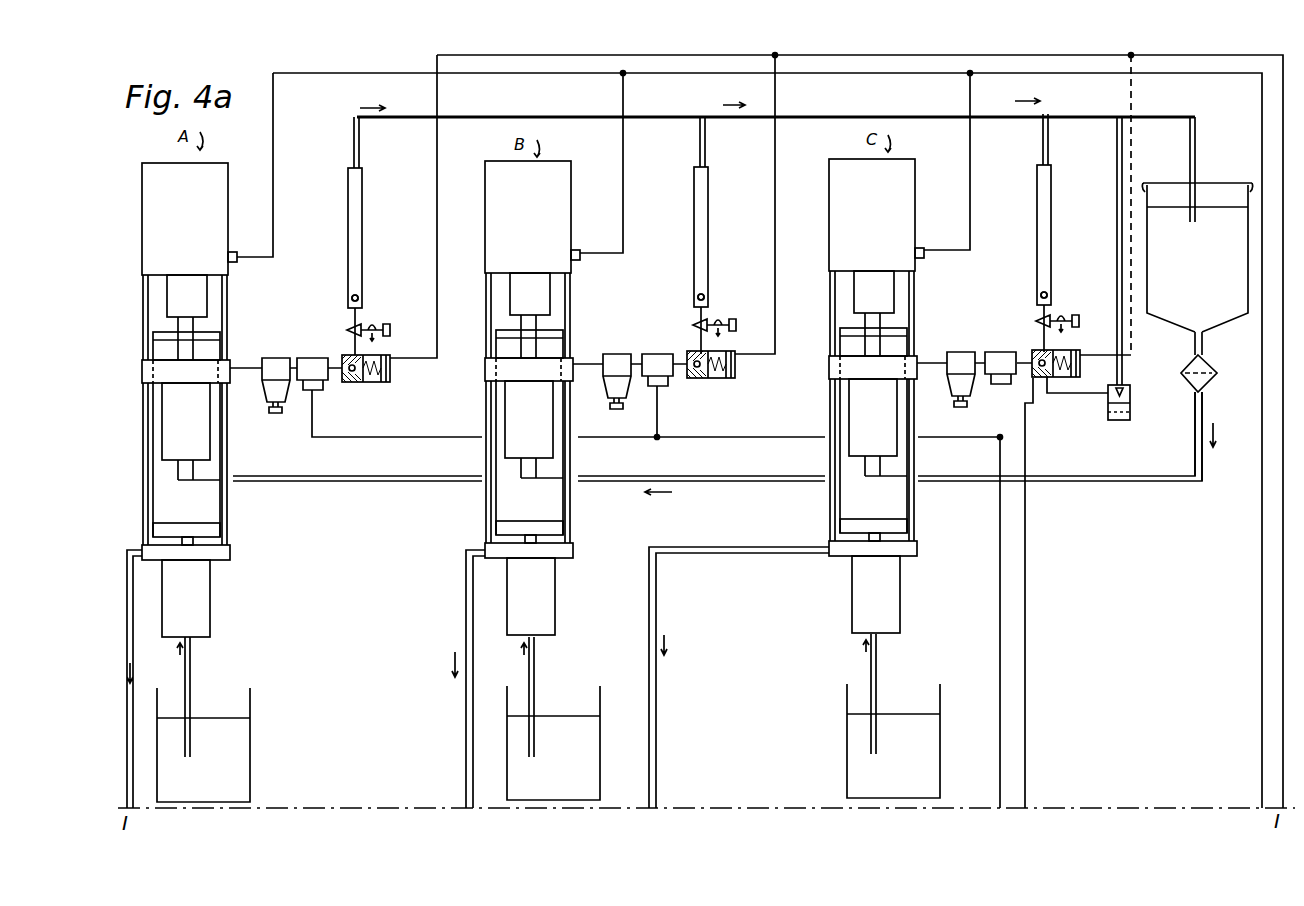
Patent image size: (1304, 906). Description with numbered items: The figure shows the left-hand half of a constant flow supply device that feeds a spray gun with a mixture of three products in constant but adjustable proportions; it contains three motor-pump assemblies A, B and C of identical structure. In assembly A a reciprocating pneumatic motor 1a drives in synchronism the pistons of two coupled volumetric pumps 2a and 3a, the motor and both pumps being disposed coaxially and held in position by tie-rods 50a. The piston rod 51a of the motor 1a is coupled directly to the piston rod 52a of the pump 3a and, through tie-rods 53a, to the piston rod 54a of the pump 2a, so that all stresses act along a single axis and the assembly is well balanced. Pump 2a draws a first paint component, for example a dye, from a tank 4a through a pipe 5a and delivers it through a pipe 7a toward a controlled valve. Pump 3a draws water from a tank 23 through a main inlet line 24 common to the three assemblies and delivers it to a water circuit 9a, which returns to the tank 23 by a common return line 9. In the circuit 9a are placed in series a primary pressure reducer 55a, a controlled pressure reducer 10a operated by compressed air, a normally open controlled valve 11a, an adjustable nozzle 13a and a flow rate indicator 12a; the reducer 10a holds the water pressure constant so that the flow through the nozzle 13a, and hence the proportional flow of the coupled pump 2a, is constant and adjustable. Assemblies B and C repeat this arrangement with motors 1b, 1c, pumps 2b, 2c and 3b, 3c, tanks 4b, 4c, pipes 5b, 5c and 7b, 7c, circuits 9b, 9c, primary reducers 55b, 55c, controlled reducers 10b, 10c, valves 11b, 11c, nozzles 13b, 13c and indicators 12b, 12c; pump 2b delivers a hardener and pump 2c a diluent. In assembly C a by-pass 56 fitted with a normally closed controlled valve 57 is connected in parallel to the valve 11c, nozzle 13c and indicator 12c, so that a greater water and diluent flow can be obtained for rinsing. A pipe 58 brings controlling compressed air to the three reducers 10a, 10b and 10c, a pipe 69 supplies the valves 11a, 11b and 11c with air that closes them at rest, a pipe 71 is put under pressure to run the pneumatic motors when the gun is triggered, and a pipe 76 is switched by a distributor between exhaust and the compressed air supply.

The reciprocating motor 1a is at (158, 180).
The reciprocating motor 1b is at (532, 217).
The reciprocating motor 1c is at (876, 215).
The volumetric pump 2a is at (186, 598).
The volumetric pump 2b is at (531, 596).
The volumetric pump 2c is at (876, 594).
The volumetric pump 3a is at (191, 431).
The volumetric pump 3b is at (534, 429).
The volumetric pump 3c is at (878, 427).
The tank 4a is at (252, 752).
The tank 4b is at (600, 766).
The tank 4c is at (947, 770).
The pipe 5a is at (190, 666).
The pipe 5b is at (535, 692).
The pipe 5c is at (878, 692).
The pipe 7a is at (128, 652).
The pipe 7b is at (466, 738).
The pipe 7c is at (655, 714).
The return line 9 is at (673, 117).
The water circuit 9a is at (339, 286).
The water circuit 9b is at (687, 291).
The water circuit 9c is at (1032, 292).
The controlled pressure reducer 10a is at (312, 356).
The controlled pressure reducer 10b is at (656, 356).
The controlled pressure reducer 10c is at (998, 352).
The controlled valve 11a is at (355, 384).
The controlled valve 11b is at (704, 380).
The controlled valve 11c is at (1036, 398).
The flow rate indicator 12a is at (357, 229).
The flow rate indicator 12b is at (702, 230).
The flow rate indicator 12c is at (1048, 207).
The adjusting nozzle 13a is at (378, 322).
The adjusting nozzle 13b is at (728, 321).
The adjusting nozzle 13c is at (1075, 317).
The tank 23 is at (1197, 299).
The main inlet line 24 is at (975, 482).
The tie-rods 50a is at (229, 304).
The piston rod 51a is at (183, 298).
The piston rod 52a is at (190, 352).
The tie-rods 53a is at (158, 520).
The piston rod 54a is at (203, 551).
The primary pressure reducer 55a is at (272, 358).
The primary pressure reducer 55b is at (615, 353).
The primary pressure reducer 55c is at (958, 352).
The by-pass 56 is at (1117, 255).
The controlled valve 57 is at (1130, 398).
The pipe 58 is at (1000, 460).
The pipe 69 is at (1283, 400).
The pipe 71 is at (1262, 518).
The pipe 76 is at (1025, 665).